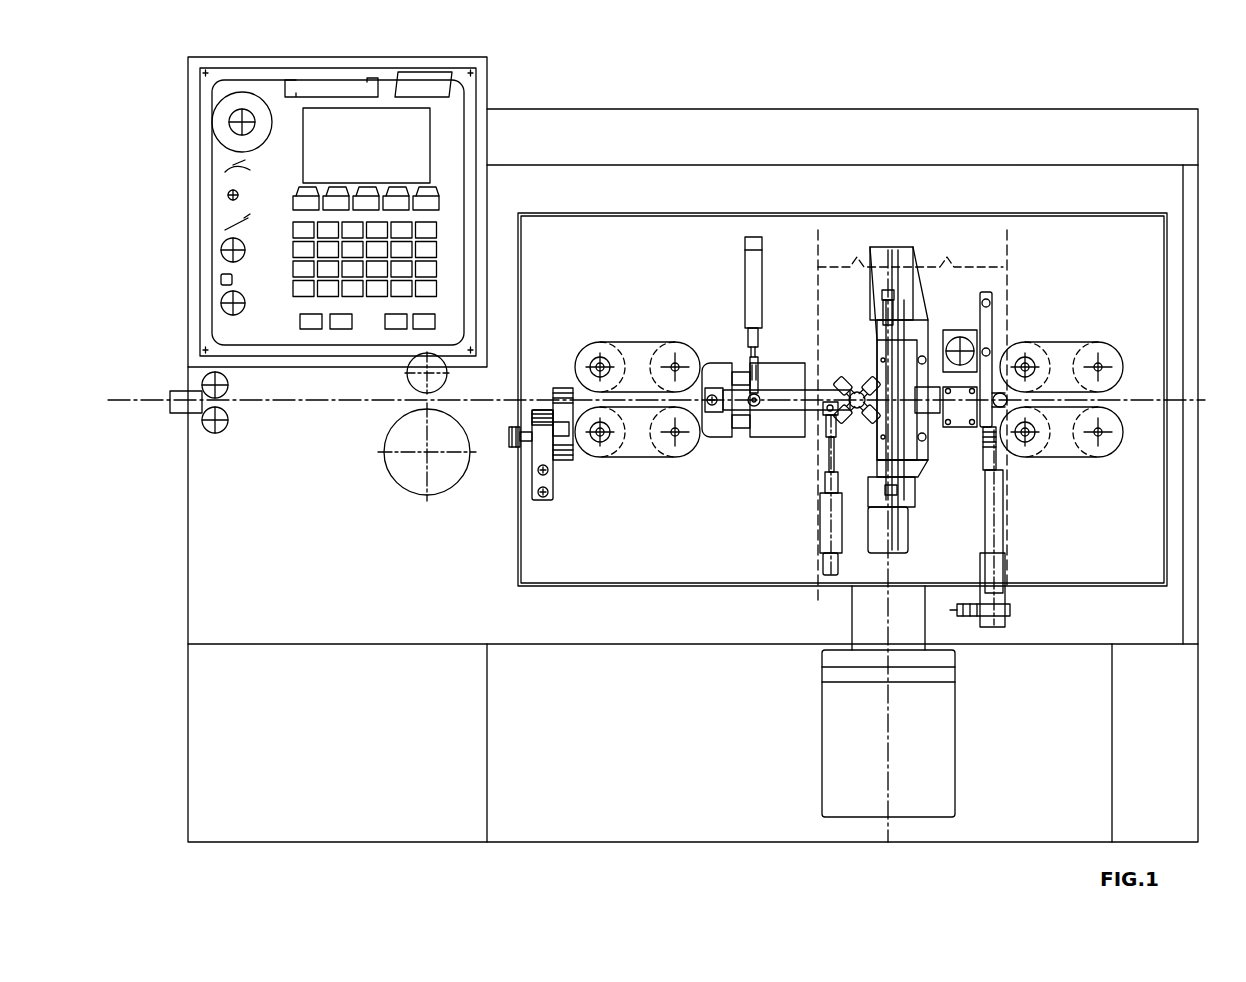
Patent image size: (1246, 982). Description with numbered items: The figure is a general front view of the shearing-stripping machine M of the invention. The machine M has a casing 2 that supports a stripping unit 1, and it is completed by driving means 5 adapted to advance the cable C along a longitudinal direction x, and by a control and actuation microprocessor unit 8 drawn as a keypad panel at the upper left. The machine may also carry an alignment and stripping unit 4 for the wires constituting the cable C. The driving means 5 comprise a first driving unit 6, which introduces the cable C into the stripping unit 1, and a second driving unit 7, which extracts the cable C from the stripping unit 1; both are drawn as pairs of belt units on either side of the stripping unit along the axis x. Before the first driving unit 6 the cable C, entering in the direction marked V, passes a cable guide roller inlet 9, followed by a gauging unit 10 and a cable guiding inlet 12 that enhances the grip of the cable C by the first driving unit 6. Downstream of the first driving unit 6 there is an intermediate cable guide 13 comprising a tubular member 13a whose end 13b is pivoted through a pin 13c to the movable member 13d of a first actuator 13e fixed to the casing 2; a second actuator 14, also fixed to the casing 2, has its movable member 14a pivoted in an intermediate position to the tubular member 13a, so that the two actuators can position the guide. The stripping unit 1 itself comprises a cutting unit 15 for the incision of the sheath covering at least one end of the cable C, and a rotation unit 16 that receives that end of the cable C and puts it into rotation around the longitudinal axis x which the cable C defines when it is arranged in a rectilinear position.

The shearing-stripping machine M is at (832, 101).
The stripping unit 1 is at (952, 262).
The casing 2 is at (205, 600).
The alignment and stripping unit 4 is at (857, 258).
The driving means 5 is at (655, 325).
The first driving unit 6 is at (613, 330).
The second driving unit 7 is at (1075, 330).
The control and actuation microprocessor unit 8 is at (447, 130).
The cable guide roller inlet 9 is at (228, 445).
The gauging unit 10 is at (378, 490).
The cable guiding inlet 12 is at (523, 482).
The intermediate cable guide 13 is at (749, 430).
The tubular member 13a is at (788, 400).
The end 13b is at (733, 405).
The pin 13c is at (710, 405).
The movable member 13d is at (713, 427).
The first actuator 13e is at (773, 357).
The second actuator 14 is at (752, 277).
The movable member 14a is at (748, 353).
The cutting unit 15 is at (898, 432).
The rotation unit 16 is at (970, 470).
The cable C is at (185, 414).
The feed direction V is at (160, 403).
The longitudinal direction x is at (1130, 400).